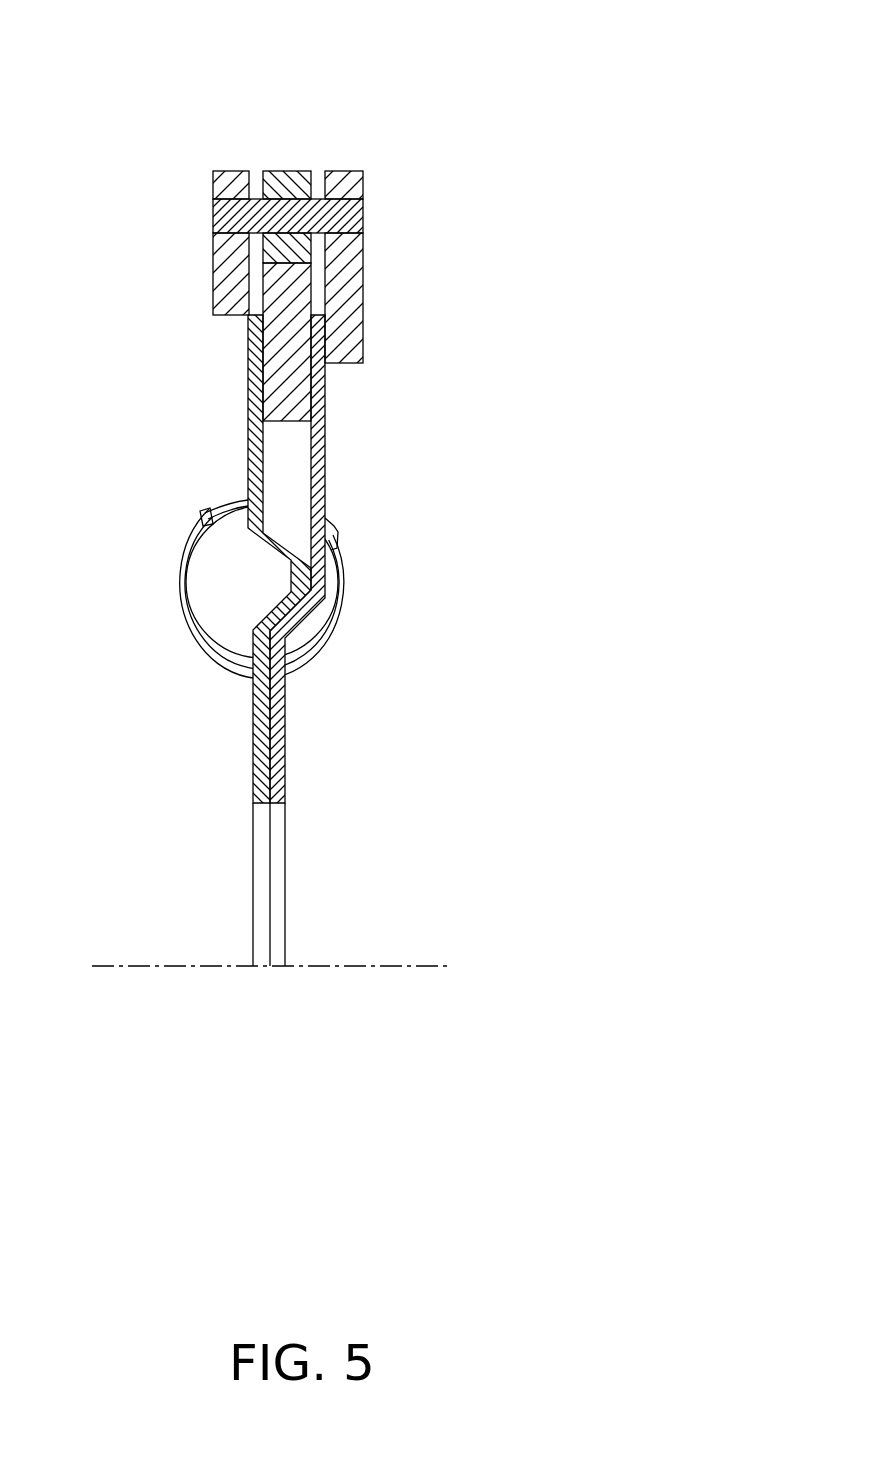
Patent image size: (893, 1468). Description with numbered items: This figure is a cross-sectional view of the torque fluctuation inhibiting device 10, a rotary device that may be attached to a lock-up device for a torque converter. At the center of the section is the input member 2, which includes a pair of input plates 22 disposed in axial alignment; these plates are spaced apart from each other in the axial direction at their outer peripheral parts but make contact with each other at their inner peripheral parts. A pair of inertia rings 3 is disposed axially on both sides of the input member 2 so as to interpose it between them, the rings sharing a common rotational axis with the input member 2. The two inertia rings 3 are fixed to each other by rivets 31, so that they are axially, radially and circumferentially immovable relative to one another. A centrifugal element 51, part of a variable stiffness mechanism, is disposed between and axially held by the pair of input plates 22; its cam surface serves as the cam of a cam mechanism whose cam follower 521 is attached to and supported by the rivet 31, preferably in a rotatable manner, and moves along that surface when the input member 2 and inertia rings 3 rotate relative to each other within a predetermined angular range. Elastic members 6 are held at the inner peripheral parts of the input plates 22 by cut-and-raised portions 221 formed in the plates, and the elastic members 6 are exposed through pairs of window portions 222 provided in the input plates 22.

The torque fluctuation inhibiting device 10 is at (462, 128).
The input member 2 is at (326, 398).
The input plates 22 is at (248, 438).
The cut-and-raised portions 221 is at (212, 510).
The window portions 222 is at (196, 537).
The inertia rings 3 is at (215, 268).
The rivets 31 is at (362, 218).
The centrifugal element 51 is at (287, 347).
The cam follower 521 is at (298, 172).
The elastic members 6 is at (216, 590).